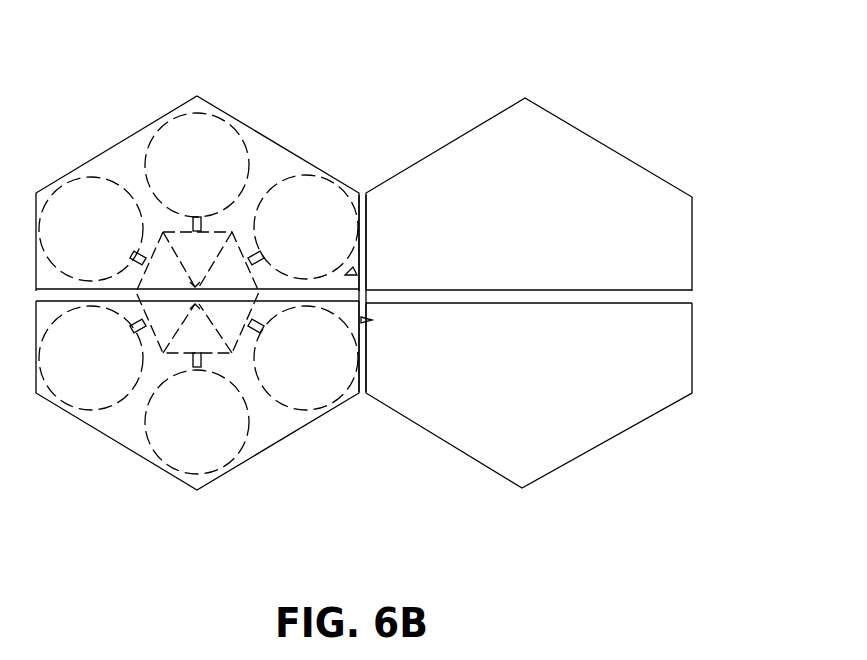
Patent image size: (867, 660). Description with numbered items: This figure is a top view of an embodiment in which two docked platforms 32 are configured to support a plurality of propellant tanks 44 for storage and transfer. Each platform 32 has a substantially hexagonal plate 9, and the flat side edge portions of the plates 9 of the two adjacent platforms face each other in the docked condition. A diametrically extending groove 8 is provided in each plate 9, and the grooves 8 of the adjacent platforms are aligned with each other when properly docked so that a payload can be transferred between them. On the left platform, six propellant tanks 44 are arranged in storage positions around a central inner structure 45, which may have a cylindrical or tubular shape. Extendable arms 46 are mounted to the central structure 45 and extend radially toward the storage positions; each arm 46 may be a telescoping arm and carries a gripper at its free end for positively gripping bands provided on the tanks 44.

The platform 32 is at (103, 157).
The groove 8 is at (63, 295).
The hexagonal plate 9 is at (265, 425).
The propellant tank 44 is at (203, 135).
The central inner structure 45 is at (157, 245).
The extendable arm 46 is at (204, 220).